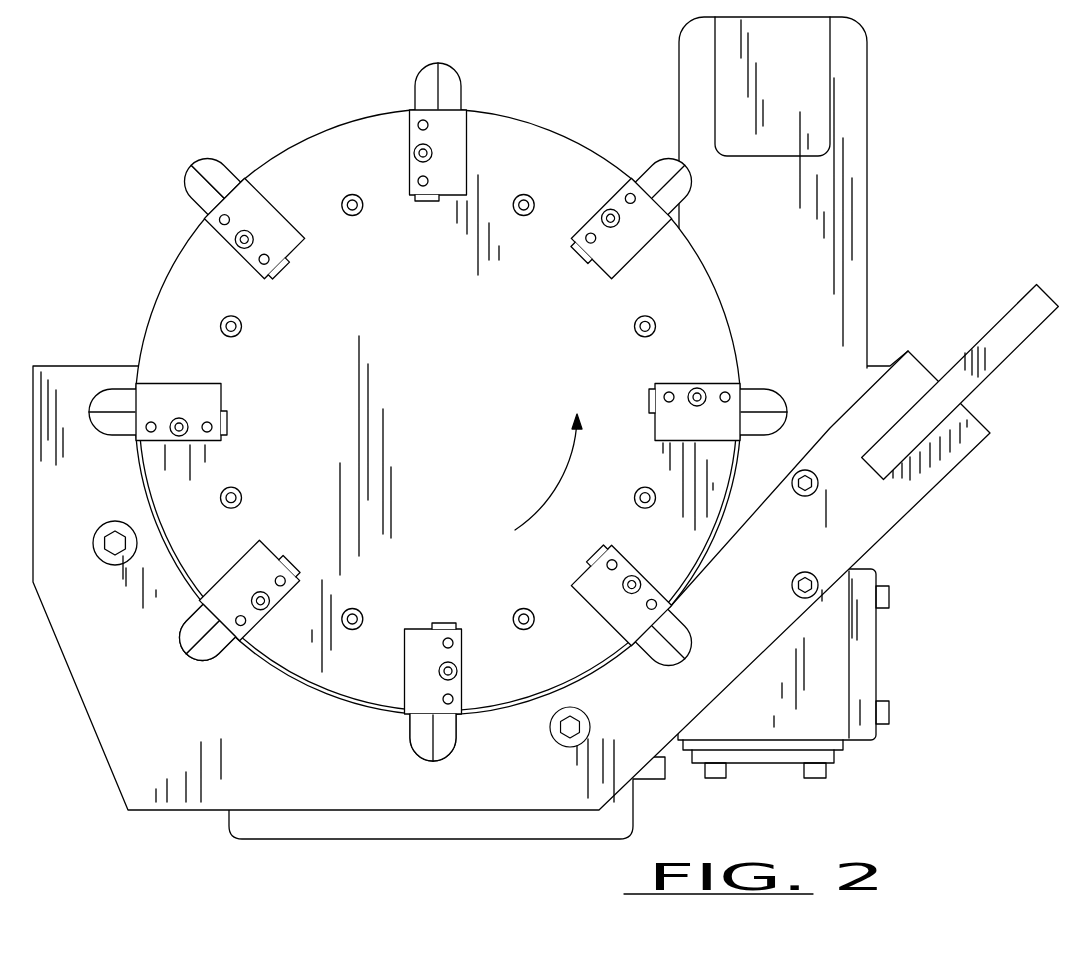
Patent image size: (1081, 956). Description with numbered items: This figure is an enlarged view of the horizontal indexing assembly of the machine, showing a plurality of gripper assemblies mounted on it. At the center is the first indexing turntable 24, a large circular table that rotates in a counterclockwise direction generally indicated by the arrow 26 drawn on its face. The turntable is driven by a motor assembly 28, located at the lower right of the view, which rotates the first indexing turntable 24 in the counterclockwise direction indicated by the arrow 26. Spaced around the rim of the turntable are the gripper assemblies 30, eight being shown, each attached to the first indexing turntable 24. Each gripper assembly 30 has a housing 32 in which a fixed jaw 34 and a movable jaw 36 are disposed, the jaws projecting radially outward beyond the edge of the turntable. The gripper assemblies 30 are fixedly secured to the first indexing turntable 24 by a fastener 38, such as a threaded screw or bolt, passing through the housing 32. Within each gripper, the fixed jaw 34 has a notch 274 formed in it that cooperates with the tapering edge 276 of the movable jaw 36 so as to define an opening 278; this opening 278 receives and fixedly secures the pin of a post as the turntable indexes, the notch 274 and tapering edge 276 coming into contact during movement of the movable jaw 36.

The first indexing turntable 24 is at (447, 442).
The arrow 26 is at (573, 419).
The motor assembly 28 is at (842, 661).
The gripper assembly 30 is at (246, 194).
The housing 32 is at (288, 243).
The fixed jaw 34 is at (186, 189).
The movable jaw 36 is at (219, 165).
The fastener 38 is at (238, 244).
The notch 274 is at (170, 662).
The tapering edge 276 is at (182, 661).
The opening 278 is at (431, 757).